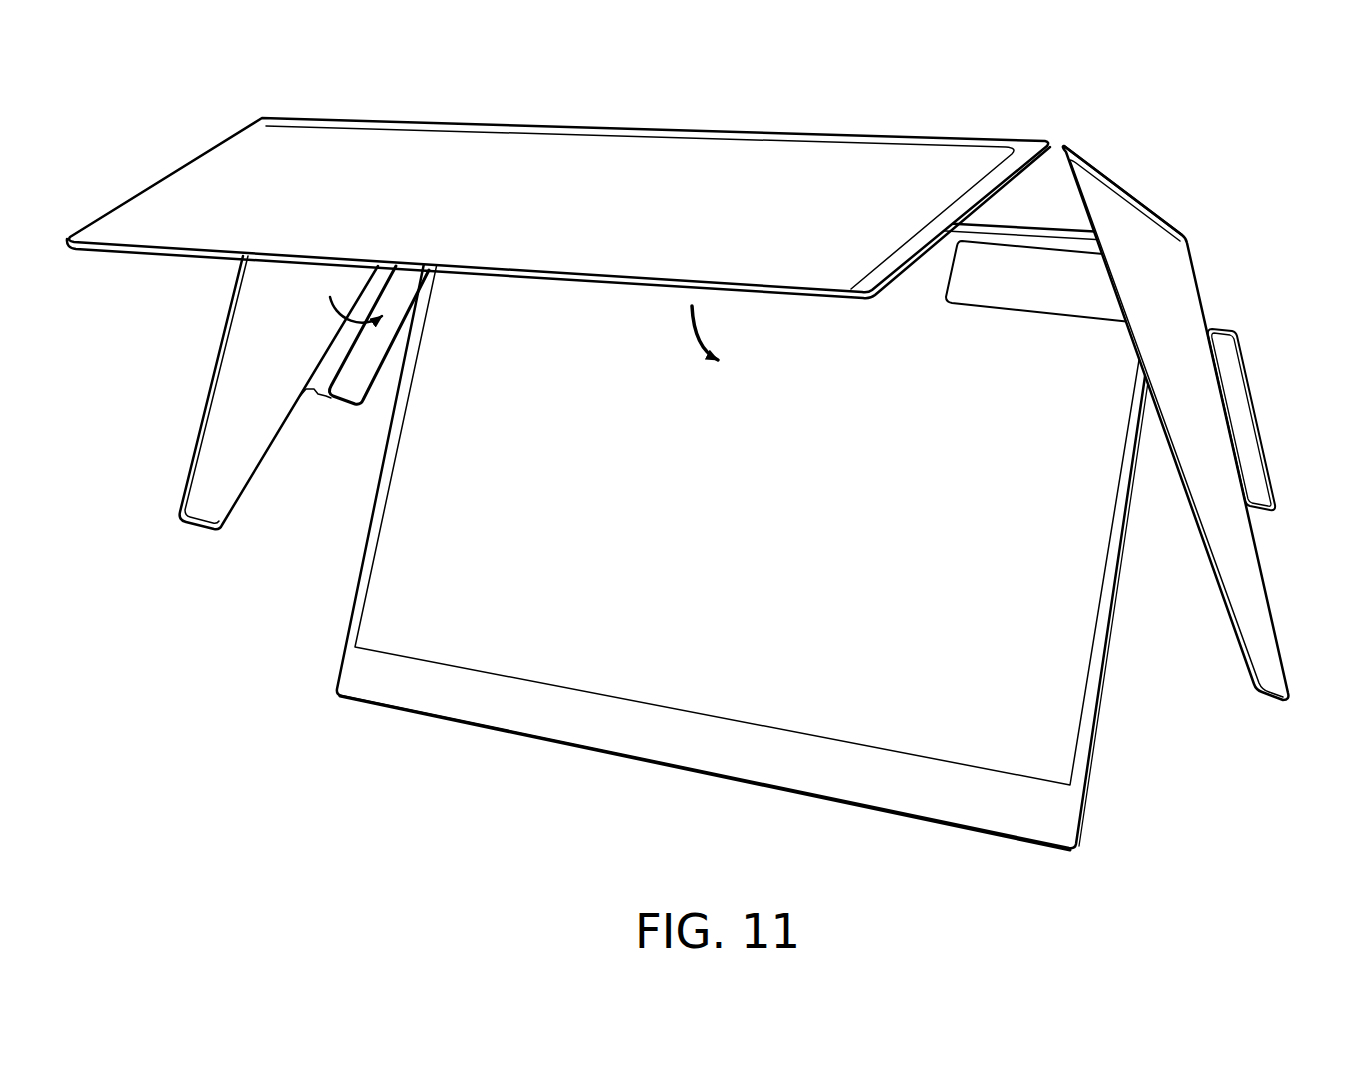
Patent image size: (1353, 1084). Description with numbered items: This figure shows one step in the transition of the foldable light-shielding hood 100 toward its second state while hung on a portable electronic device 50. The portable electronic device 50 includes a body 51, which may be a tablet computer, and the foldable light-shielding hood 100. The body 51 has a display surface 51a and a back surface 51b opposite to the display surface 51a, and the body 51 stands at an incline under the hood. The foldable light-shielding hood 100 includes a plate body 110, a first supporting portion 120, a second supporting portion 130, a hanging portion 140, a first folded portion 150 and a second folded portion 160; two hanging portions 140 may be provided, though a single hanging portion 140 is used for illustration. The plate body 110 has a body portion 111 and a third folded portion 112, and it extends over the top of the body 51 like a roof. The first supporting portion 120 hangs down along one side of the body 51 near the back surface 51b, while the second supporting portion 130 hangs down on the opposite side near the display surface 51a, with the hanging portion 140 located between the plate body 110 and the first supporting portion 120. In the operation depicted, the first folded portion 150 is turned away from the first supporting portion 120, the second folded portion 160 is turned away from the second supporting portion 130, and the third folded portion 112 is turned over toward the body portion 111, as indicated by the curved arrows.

The foldable light-shielding hood 100 is at (160, 106).
The plate body 110 is at (643, 173).
The body portion 111 is at (1040, 193).
The third folded portion 112 is at (947, 155).
The first supporting portion 120 is at (1237, 565).
The second supporting portion 130 is at (248, 338).
The hanging portion 140 is at (1085, 297).
The first folded portion 150 is at (1246, 410).
The second folded portion 160 is at (352, 388).
The portable electronic device 50 is at (1256, 877).
The body 51 is at (783, 536).
The display surface 51a is at (657, 615).
The back surface 51b is at (1106, 707).